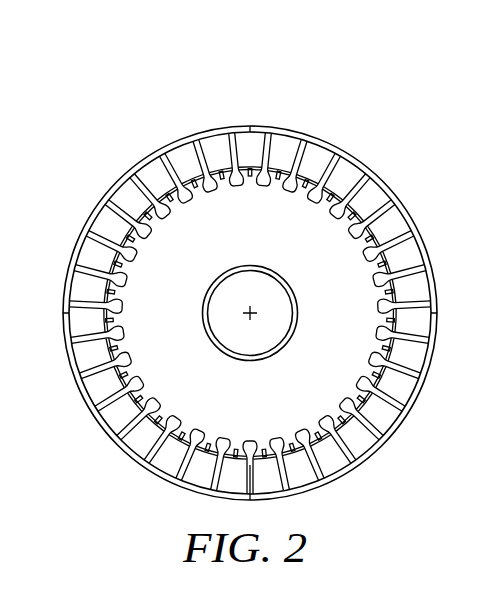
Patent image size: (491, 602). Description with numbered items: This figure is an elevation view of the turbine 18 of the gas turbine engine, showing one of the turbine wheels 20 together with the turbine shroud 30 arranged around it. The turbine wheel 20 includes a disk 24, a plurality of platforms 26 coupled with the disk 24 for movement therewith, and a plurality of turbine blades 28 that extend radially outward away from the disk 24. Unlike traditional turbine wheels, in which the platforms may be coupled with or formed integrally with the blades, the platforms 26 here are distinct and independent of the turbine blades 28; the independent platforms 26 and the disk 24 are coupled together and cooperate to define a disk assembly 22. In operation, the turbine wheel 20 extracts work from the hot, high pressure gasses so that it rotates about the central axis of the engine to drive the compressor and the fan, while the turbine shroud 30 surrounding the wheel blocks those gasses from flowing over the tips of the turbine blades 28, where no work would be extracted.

The turbine 18 is at (227, 266).
The turbine wheel 20 is at (157, 170).
The disk assembly 22 is at (157, 249).
The disk 24 is at (158, 298).
The platforms 26 is at (221, 162).
The turbine blades 28 is at (373, 182).
The turbine shroud 30 is at (360, 136).